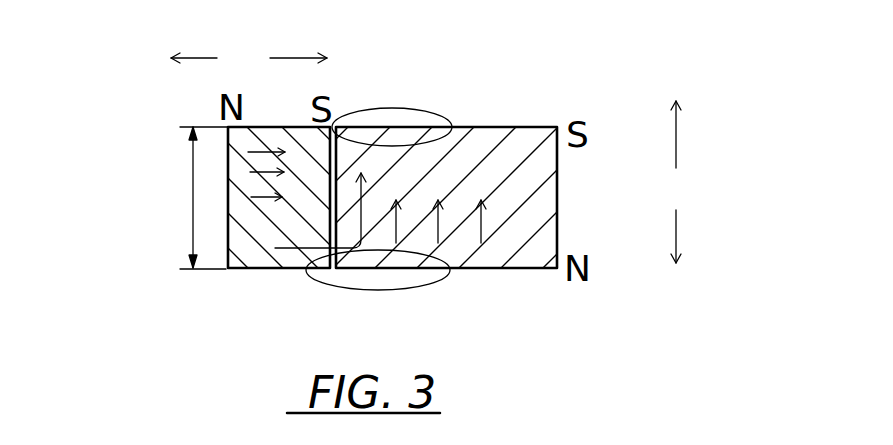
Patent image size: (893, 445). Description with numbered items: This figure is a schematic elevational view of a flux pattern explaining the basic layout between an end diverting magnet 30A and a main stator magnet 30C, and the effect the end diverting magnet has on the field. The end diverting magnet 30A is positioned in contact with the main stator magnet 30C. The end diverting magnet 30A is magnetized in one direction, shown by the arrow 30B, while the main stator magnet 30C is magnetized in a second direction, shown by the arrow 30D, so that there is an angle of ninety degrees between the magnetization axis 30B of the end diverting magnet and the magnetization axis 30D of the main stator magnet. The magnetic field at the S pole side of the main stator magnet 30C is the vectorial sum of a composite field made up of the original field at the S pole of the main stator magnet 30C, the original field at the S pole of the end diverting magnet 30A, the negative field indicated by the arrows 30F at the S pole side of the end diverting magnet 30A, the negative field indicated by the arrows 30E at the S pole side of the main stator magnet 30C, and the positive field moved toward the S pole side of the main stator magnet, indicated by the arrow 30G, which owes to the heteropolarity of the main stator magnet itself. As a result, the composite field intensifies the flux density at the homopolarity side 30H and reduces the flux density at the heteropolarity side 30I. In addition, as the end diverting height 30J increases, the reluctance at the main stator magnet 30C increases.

The end diverting magnet 30A is at (226, 227).
The arrow indicating magnetization direction of end diverting magnet 30B is at (212, 43).
The main stator magnet 30C is at (503, 126).
The arrow indicating magnetization direction of main stator magnet 30D is at (690, 212).
The arrows indicating negative field at S pole side of main stator magnet 30E is at (482, 224).
The arrows indicating negative field at S pole side of end diverting magnet 30F is at (257, 162).
The arrow indicating positive field moved toward S pole side of main stator magnet 30G is at (291, 255).
The homopolarity side 30H is at (386, 107).
The heteropolarity side 30I is at (398, 290).
The end diverting height 30J is at (190, 153).